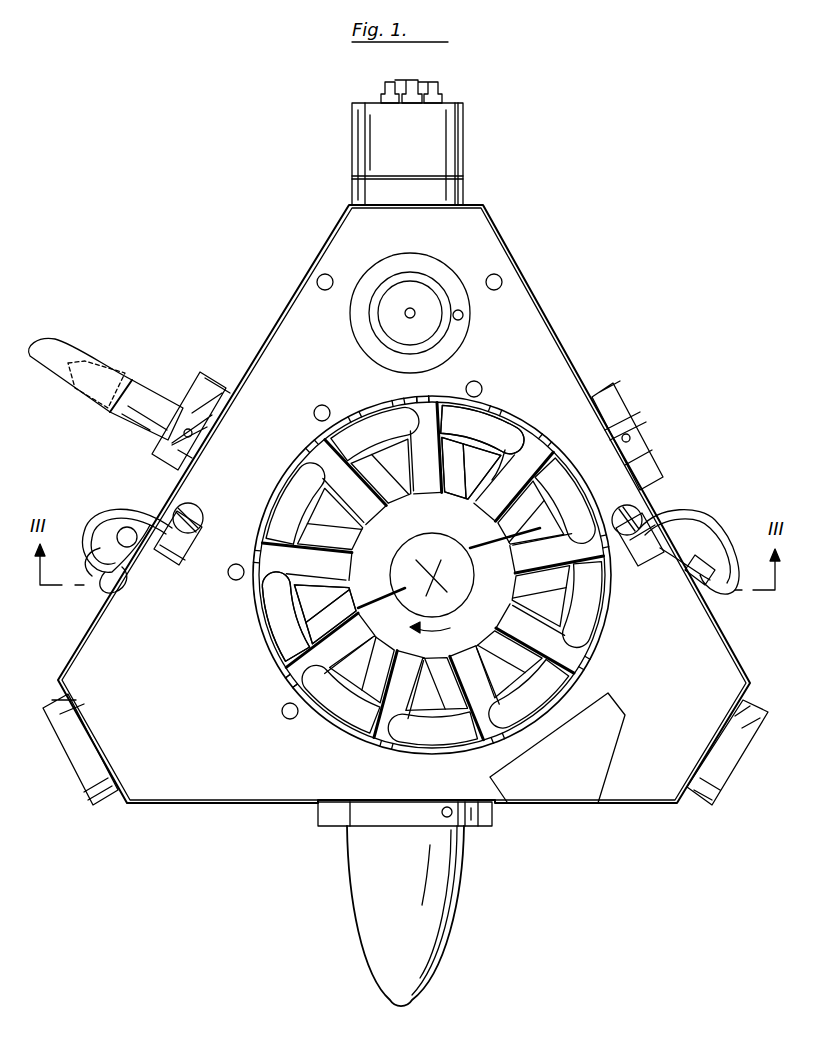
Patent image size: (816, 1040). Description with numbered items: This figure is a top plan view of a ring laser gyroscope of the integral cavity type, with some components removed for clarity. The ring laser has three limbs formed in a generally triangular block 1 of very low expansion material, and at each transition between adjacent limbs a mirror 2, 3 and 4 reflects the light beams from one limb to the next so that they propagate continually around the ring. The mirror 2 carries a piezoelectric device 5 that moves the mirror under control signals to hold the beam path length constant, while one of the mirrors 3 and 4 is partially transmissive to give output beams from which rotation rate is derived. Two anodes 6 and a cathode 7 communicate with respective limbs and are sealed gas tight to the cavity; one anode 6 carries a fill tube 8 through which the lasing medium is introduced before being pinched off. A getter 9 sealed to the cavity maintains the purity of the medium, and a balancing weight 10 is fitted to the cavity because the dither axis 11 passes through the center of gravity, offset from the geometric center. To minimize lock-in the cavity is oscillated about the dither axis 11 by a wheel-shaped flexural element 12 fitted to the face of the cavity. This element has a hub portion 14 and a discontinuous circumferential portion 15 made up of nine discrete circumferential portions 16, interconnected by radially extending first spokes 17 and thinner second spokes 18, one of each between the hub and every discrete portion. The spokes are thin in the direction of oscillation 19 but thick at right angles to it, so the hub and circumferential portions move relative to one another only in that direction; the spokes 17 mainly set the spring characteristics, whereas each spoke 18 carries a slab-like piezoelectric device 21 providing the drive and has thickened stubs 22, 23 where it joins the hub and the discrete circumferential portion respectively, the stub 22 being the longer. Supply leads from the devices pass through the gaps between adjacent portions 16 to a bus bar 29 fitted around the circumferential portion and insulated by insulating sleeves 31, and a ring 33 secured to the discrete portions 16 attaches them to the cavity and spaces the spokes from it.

The triangular block 1 is at (500, 256).
The mirror 2 is at (464, 188).
The mirror 3 is at (104, 805).
The mirror 4 is at (706, 806).
The piezoelectric device 5 is at (464, 148).
The anode 6 is at (212, 382).
The cathode 7 is at (460, 892).
The fill tube 8 is at (150, 396).
The getter 9 is at (426, 288).
The balancing weight 10 is at (610, 768).
The dither axis 11 is at (432, 575).
The flexural element 12 is at (264, 654).
The hub portion 14 is at (445, 527).
The circumferential portion 15 is at (604, 638).
The discrete circumferential portion 16 is at (417, 572).
The first member or spoke 17 is at (411, 575).
The second member or spoke 18 is at (560, 440).
The direction of oscillation 19 is at (452, 627).
The piezoelectric device 21 is at (428, 567).
The stub 22 is at (502, 540).
The stub 23 is at (292, 688).
The bus bar 29 is at (398, 402).
The insulating sleeve 31 is at (355, 417).
The ring 33 is at (506, 446).